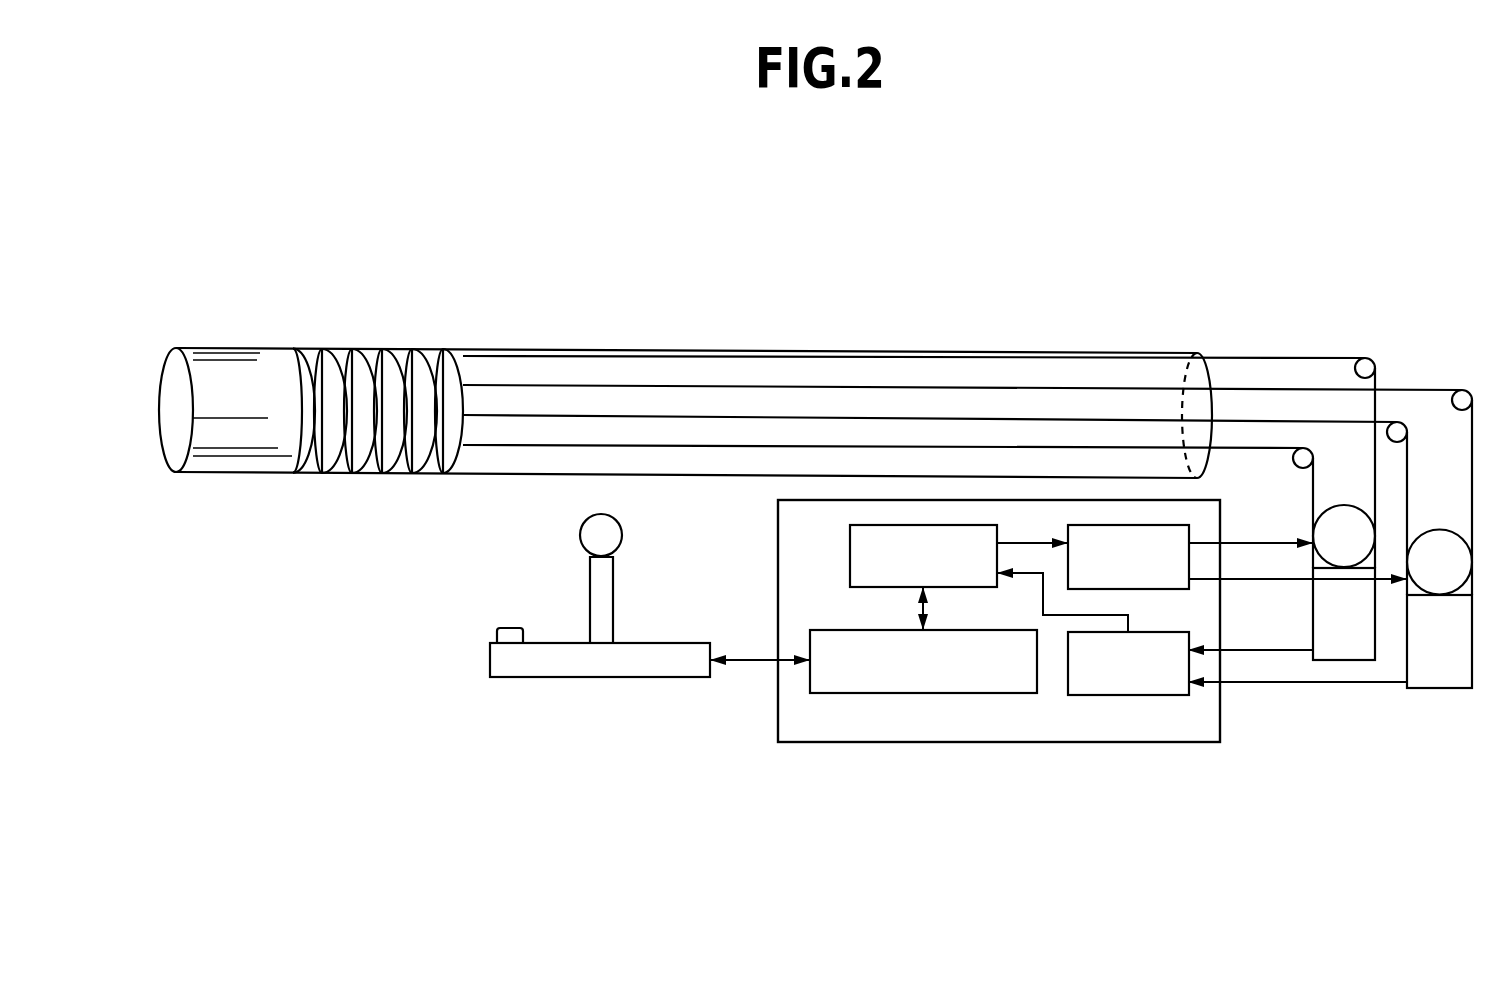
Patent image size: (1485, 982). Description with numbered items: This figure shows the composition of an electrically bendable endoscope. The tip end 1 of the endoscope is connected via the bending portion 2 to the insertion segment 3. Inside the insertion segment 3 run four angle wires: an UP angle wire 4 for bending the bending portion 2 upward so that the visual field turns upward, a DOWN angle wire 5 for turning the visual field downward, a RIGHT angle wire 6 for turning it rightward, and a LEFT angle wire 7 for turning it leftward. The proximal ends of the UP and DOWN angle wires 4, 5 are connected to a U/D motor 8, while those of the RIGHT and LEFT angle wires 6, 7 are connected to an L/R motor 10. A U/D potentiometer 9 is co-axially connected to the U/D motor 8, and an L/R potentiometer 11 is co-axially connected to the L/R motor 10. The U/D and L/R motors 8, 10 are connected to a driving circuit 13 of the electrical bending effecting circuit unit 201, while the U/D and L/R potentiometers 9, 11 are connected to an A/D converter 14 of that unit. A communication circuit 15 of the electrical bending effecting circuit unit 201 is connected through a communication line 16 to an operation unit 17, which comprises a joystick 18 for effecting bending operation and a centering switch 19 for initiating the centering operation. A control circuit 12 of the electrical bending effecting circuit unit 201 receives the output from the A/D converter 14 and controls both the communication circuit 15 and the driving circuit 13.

The tip end 1 is at (243, 473).
The bending portion 2 is at (370, 475).
The insertion segment 3 is at (737, 350).
The UP angle wire 4 is at (1275, 357).
The DOWN angle wire 5 is at (617, 443).
The RIGHT angle wire 6 is at (1415, 387).
The LEFT angle wire 7 is at (557, 415).
The U/D motor 8 is at (1342, 505).
The U/D potentiometer 9 is at (1352, 660).
The L/R motor 10 is at (1438, 529).
The L/R potentiometer 11 is at (1442, 688).
The control circuit 12 is at (850, 560).
The driving circuit 13 is at (1147, 590).
The A/D converter 14 is at (1140, 695).
The communication circuit 15 is at (970, 693).
The communication line 16 is at (750, 663).
The operation unit 17 is at (603, 678).
The joystick 18 is at (613, 592).
The centering switch 19 is at (510, 628).
The electrical bending effecting circuit unit 201 is at (1092, 646).